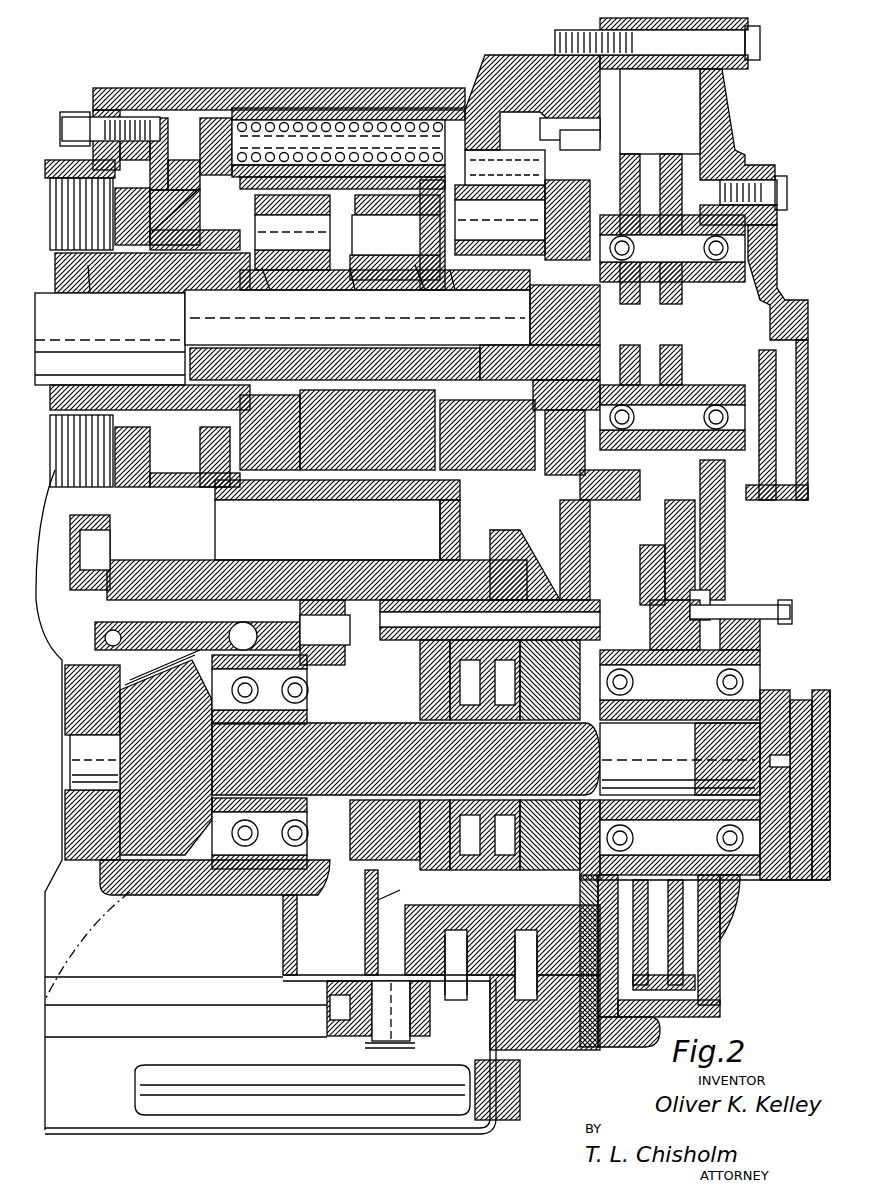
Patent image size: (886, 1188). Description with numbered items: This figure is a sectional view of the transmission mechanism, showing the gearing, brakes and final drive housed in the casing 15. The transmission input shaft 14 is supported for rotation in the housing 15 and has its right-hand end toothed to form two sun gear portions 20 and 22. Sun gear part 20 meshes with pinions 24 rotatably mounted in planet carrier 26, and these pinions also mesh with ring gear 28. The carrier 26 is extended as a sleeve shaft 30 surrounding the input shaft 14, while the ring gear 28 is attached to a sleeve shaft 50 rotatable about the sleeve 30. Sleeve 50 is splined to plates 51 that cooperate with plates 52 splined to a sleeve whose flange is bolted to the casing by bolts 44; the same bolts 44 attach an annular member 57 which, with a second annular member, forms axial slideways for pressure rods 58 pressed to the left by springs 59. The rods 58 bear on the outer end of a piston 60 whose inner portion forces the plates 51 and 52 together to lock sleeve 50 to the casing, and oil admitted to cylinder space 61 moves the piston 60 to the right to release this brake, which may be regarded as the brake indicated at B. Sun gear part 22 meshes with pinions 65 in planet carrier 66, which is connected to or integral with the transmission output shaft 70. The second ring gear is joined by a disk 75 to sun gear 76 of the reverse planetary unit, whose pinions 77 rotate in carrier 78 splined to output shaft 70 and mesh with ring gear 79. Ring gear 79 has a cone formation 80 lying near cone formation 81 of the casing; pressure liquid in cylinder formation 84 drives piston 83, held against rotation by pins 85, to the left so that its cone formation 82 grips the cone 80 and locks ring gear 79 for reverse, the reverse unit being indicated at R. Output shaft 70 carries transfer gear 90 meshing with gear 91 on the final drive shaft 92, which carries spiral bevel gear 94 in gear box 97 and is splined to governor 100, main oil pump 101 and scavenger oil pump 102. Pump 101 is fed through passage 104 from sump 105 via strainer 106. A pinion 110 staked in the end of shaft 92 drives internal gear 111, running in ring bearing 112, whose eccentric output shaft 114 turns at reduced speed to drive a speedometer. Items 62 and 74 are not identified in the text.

The transmission input shaft 14 is at (198, 375).
The housing 15 is at (782, 885).
The sun gear portion 20 is at (357, 317).
The sun gear part 22 is at (355, 304).
The pinions 24 is at (385, 304).
The planet carrier 26 is at (292, 232).
The ring gear 28 is at (337, 520).
The sleeve shaft 30 is at (110, 339).
The bolts 44 is at (70, 118).
The sleeve shaft 50 is at (152, 280).
The plates 51 is at (90, 287).
The plates 52 is at (55, 170).
The annular member 57 is at (168, 100).
The pressure rods 58 is at (228, 130).
The springs 59 is at (300, 110).
The piston 60 is at (184, 185).
The cylinder space 61 is at (176, 130).
The sleeve 62 is at (380, 180).
The pinions 65 is at (395, 237).
The planet carrier 66 is at (420, 302).
The transmission output shaft 70 is at (780, 292).
The bearing 74 is at (567, 220).
The disk 75 is at (430, 230).
The sun gear 76 is at (522, 307).
The pinions 77 is at (505, 190).
The carrier 78 is at (500, 220).
The ring gear 79 is at (505, 505).
The cone formation 80 is at (470, 110).
The cone formation 81 is at (490, 80).
The cone formation 82 is at (570, 129).
The piston 83 is at (540, 75).
The cylinder formation 84 is at (590, 512).
The pins 85 is at (612, 142).
The transfer gear 90 is at (660, 160).
The gear 91 is at (690, 565).
The final drive shaft 92 is at (378, 722).
The spiral bevel gear 94 is at (178, 860).
The housing member 97 is at (140, 860).
The governor 100 is at (680, 759).
The main oil pump 101 is at (515, 822).
The scavenger oil pump 102 is at (440, 826).
The passage 104 is at (372, 950).
The sump 105 is at (112, 1130).
The strainer 106 is at (235, 1084).
The pinion 110 is at (700, 738).
The internal gear 111 is at (785, 705).
The ring bearing 112 is at (805, 818).
The output shaft 114 is at (788, 790).
The brake B is at (52, 225).
The reverse R is at (482, 90).